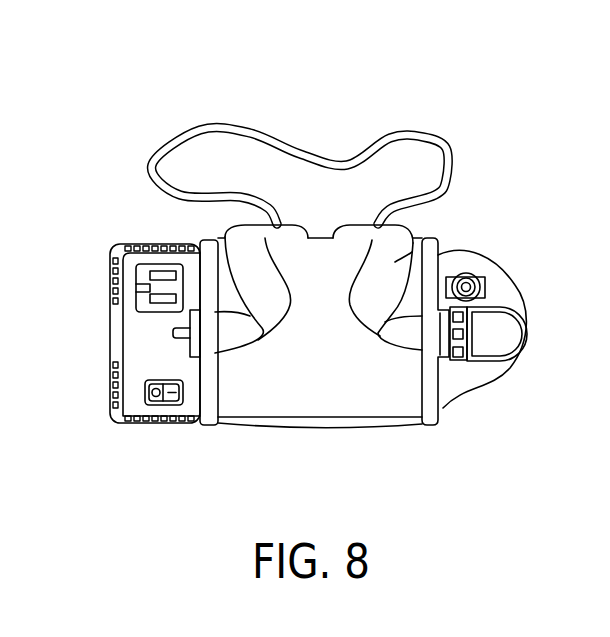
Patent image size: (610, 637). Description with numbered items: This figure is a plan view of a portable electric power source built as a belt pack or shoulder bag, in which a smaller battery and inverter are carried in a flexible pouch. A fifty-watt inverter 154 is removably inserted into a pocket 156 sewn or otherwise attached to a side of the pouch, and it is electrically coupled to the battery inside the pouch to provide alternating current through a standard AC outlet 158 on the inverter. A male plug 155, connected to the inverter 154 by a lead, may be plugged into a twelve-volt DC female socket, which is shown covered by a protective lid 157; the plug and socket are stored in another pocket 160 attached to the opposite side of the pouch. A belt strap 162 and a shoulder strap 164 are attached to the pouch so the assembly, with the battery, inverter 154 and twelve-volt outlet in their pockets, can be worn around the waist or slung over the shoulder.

The inverter 154 is at (143, 362).
The male plug 155 is at (503, 280).
The pocket 156 is at (137, 426).
The protective lid 157 is at (495, 340).
The AC outlet 158 is at (123, 248).
The pocket 160 is at (460, 387).
The belt strap 162 is at (268, 138).
The shoulder strap 164 is at (392, 264).